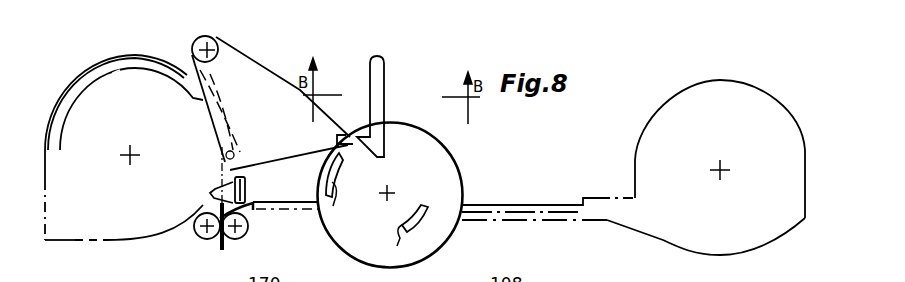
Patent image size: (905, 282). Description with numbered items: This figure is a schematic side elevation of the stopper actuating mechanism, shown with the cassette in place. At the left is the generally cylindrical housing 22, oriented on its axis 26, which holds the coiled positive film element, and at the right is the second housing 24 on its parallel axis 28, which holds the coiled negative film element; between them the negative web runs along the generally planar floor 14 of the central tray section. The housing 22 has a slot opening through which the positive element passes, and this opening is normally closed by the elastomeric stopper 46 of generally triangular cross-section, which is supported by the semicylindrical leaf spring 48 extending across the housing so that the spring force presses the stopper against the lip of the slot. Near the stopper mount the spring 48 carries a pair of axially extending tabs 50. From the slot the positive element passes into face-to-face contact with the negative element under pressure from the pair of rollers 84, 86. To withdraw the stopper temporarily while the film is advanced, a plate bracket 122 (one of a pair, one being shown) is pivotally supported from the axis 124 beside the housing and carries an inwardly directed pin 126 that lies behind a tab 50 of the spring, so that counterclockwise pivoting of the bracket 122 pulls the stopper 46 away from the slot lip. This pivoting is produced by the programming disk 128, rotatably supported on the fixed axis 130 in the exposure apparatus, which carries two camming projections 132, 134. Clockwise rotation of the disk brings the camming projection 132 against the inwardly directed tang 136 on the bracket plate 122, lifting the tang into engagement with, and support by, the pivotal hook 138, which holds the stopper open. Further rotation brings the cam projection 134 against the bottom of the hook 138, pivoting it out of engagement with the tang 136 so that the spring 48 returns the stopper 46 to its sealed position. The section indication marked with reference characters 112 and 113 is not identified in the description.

The floor 14 is at (481, 222).
The housing 22 is at (63, 242).
The housing 24 is at (698, 83).
The axis 26 is at (128, 157).
The axis 28 is at (725, 166).
The elastomeric stopper 46 is at (213, 183).
The semicylindrical leaf spring 48 is at (150, 55).
The tabs 50 is at (250, 150).
The roller 84 is at (198, 233).
The roller 86 is at (243, 237).
The element 112 is at (362, 0).
The element 113 is at (466, 0).
The plate bracket 122 is at (254, 85).
The axis 124 is at (208, 47).
The pin 126 is at (222, 147).
The programming disk 128 is at (437, 157).
The fixed axis 130 is at (383, 186).
The camming projection 132 is at (342, 191).
The cam projection 134 is at (394, 230).
The tang 136 is at (325, 132).
The pivotal hook 138 is at (378, 97).